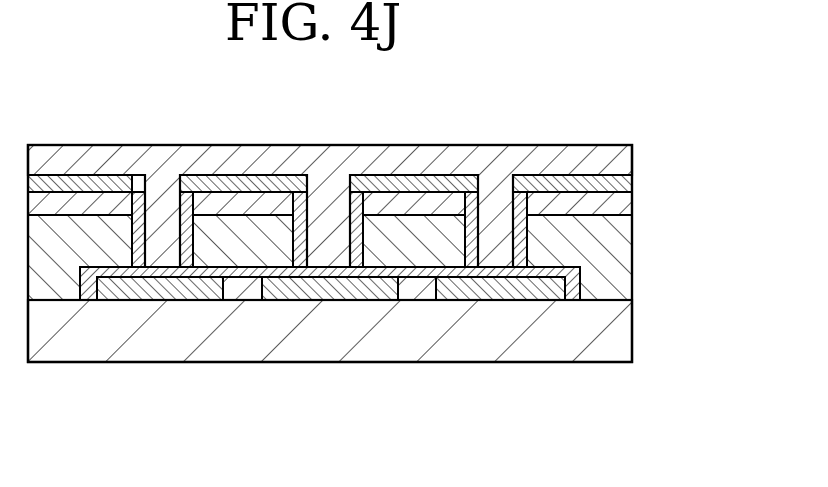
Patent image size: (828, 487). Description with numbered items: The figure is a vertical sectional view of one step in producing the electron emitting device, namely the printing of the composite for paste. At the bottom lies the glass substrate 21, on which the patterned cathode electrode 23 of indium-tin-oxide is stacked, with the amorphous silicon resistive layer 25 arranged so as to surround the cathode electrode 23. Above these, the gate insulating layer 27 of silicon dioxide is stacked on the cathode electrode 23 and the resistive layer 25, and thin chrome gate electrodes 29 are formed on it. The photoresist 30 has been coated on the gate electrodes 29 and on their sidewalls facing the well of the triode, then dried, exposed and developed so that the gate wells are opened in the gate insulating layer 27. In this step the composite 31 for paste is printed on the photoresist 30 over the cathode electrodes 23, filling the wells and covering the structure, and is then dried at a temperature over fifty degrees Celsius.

The glass substrate 21 is at (615, 335).
The cathode electrode 23 is at (519, 283).
The resistive layer 25 is at (395, 283).
The gate insulating layer 27 is at (620, 260).
The gate electrodes 29 is at (622, 208).
The photoresist 30 is at (612, 186).
The composite for paste 31 is at (615, 157).